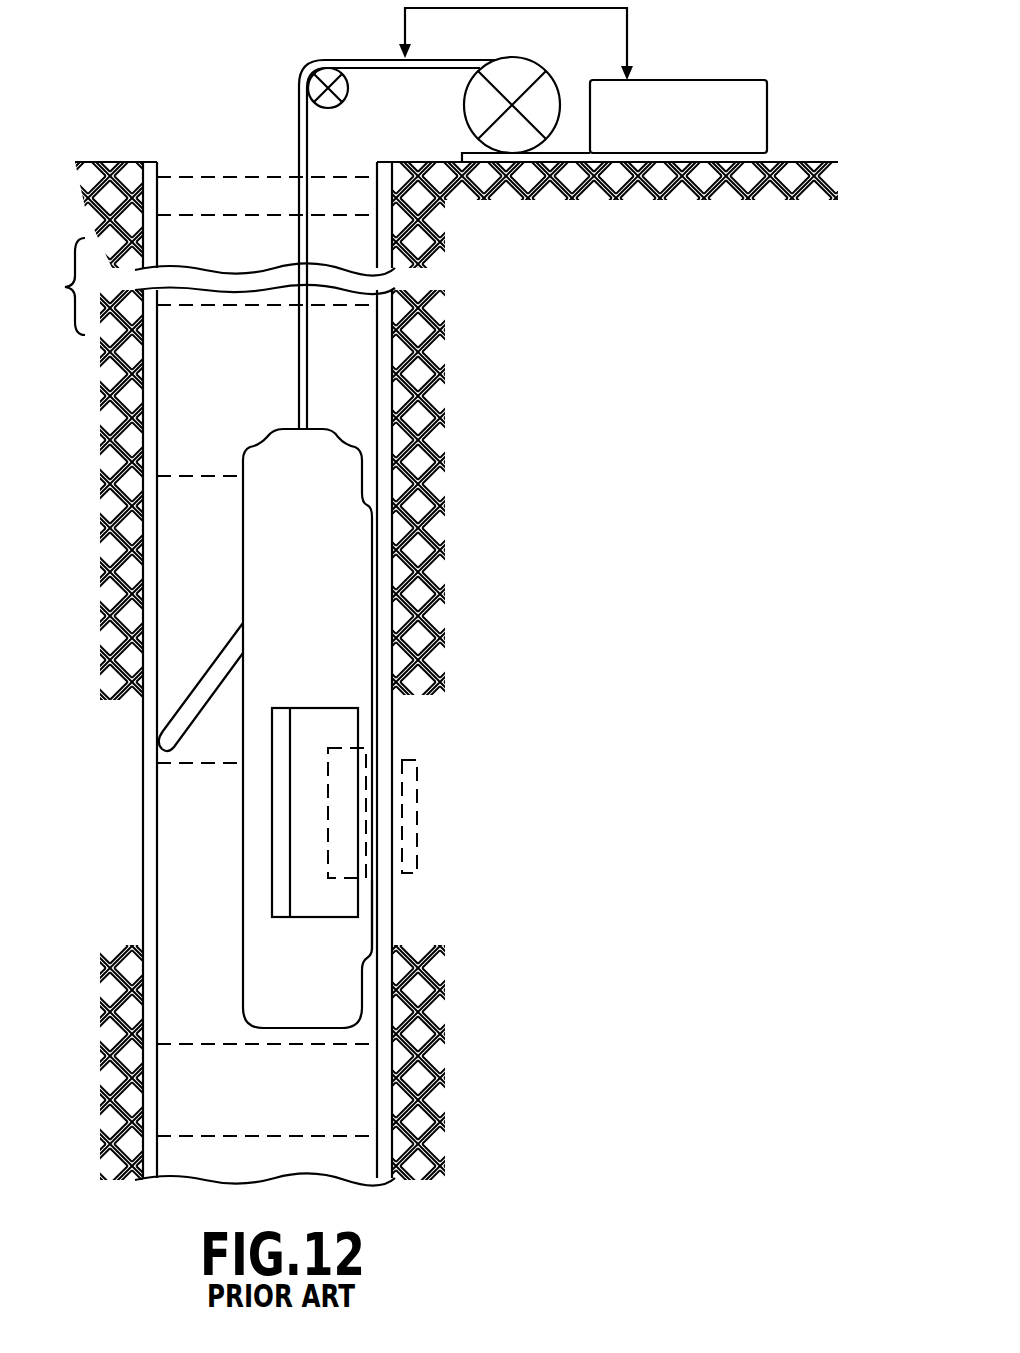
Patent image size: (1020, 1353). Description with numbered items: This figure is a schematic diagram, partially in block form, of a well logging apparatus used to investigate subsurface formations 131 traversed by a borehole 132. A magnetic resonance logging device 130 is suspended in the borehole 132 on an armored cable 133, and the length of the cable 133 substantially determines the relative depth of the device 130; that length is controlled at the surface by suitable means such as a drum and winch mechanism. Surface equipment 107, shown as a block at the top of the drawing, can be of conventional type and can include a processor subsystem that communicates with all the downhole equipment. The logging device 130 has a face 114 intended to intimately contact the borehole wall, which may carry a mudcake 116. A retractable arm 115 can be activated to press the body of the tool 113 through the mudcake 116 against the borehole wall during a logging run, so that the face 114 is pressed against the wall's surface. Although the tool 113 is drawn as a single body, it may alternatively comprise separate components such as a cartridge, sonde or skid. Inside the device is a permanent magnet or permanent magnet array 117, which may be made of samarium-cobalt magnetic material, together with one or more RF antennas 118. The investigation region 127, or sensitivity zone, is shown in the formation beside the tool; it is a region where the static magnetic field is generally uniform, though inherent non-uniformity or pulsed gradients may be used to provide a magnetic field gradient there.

The surface equipment 107 is at (685, 80).
The tool 113 is at (233, 925).
The face 114 is at (372, 926).
The retractable arm 115 is at (200, 682).
The mudcake 116 is at (148, 395).
The permanent magnet array 117 is at (262, 828).
The RF antenna 118 is at (350, 878).
The investigation region 127 is at (417, 760).
The logging device 130 is at (230, 574).
The subsurface formations 131 is at (130, 162).
The borehole 132 is at (204, 172).
The armored cable 133 is at (298, 175).